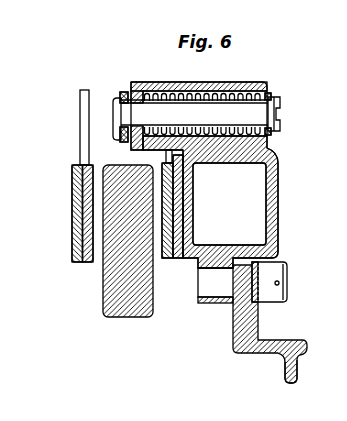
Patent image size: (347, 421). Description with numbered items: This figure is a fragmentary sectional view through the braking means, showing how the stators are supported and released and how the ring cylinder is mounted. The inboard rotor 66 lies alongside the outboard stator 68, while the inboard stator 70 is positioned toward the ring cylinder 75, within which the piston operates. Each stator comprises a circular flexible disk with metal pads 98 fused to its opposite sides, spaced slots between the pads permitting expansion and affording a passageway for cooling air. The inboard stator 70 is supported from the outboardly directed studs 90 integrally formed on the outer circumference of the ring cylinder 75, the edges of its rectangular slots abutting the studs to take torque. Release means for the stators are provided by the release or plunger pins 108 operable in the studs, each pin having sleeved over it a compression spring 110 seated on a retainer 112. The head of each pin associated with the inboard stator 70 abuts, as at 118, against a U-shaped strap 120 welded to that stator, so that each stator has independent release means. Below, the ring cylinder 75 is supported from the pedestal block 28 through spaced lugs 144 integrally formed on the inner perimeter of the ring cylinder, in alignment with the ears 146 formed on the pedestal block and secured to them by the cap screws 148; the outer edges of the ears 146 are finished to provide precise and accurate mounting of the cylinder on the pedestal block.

The pedestal block 28 is at (283, 377).
The inboard rotor 66 is at (115, 318).
The outboard stator 68 is at (83, 97).
The inboard stator 70 is at (171, 258).
The ring cylinder 75 is at (278, 208).
The studs 90 is at (143, 90).
The metal pads 98 is at (72, 262).
The release pins 108 is at (130, 110).
The compression springs 110 is at (234, 92).
The retainers 112 is at (272, 98).
The abutment 118 is at (113, 130).
The U-shaped strap 120 is at (121, 96).
The lugs 144 is at (212, 303).
The ears 146 is at (250, 316).
The cap screws 148 is at (268, 274).